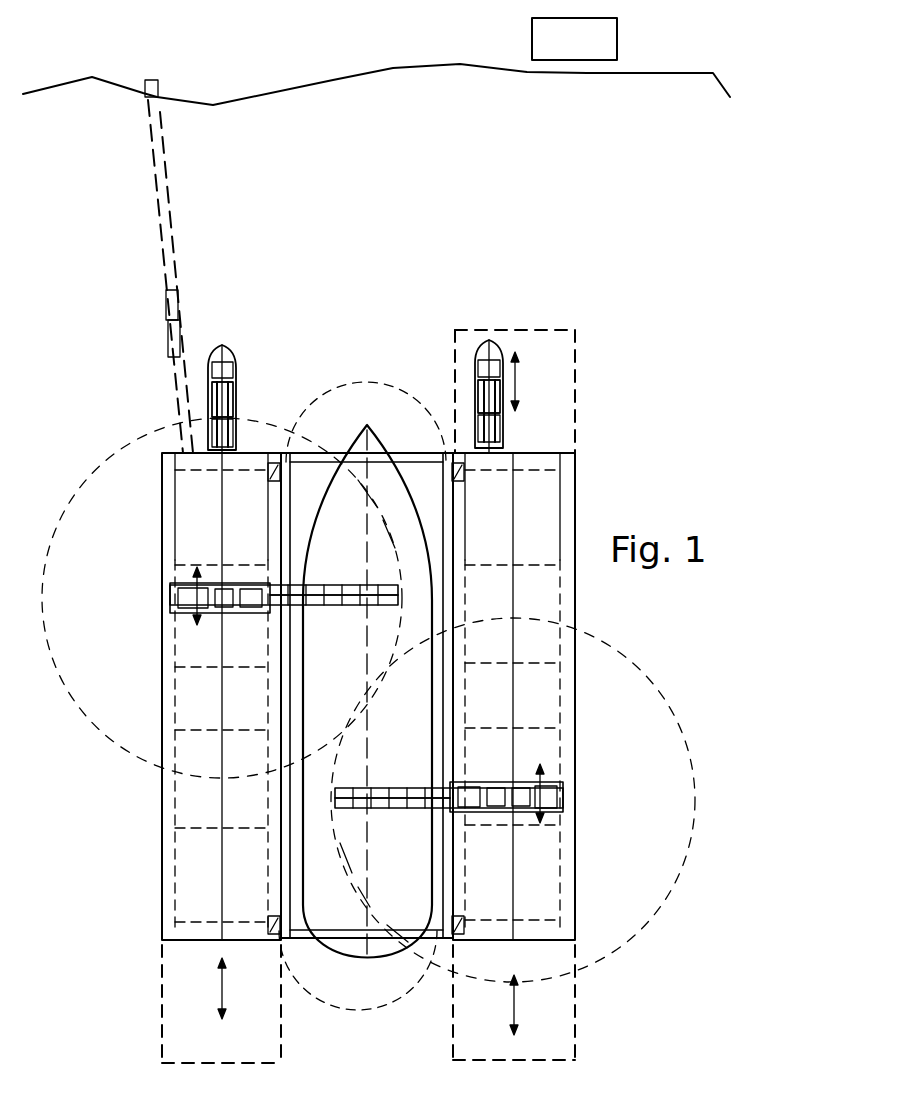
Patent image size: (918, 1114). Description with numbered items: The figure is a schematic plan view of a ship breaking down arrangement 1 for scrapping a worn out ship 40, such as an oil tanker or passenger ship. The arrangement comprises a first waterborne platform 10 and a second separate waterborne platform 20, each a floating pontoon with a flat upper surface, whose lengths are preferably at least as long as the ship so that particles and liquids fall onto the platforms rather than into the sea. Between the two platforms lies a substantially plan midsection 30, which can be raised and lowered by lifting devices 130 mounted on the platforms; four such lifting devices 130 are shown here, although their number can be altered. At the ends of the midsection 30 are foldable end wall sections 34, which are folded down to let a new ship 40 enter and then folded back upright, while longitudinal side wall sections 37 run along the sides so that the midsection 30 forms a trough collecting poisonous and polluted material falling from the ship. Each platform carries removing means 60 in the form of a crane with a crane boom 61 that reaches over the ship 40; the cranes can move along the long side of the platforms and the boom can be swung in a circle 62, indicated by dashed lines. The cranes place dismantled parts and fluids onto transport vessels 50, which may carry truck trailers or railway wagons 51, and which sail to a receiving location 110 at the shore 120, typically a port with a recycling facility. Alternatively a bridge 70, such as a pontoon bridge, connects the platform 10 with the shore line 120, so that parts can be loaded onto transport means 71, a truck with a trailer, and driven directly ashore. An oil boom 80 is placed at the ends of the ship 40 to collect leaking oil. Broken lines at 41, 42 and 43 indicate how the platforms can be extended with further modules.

The ship breaking down arrangement 1 is at (648, 339).
The first waterborne platform 10 is at (180, 497).
The second waterborne platform 20 is at (550, 493).
The midsection 30 is at (307, 470).
The end wall sections 34 is at (427, 457).
The longitudinal side wall sections 37 is at (293, 557).
The ship 40 is at (350, 383).
The module extension 41 is at (551, 346).
The module extension 42 is at (180, 990).
The module extension 43 is at (560, 1003).
The transport vessels 50 is at (228, 355).
The truck trailers or railway wagons 51 is at (238, 385).
The removing means 60 is at (180, 613).
The crane boom 61 is at (330, 592).
The circle 62 is at (77, 700).
The bridge 70 is at (178, 242).
The transport means 71 is at (180, 302).
The oil boom 80 is at (356, 458).
The receiving location 110 is at (587, 60).
The shore 120 is at (403, 72).
The lifting devices 130 is at (273, 477).